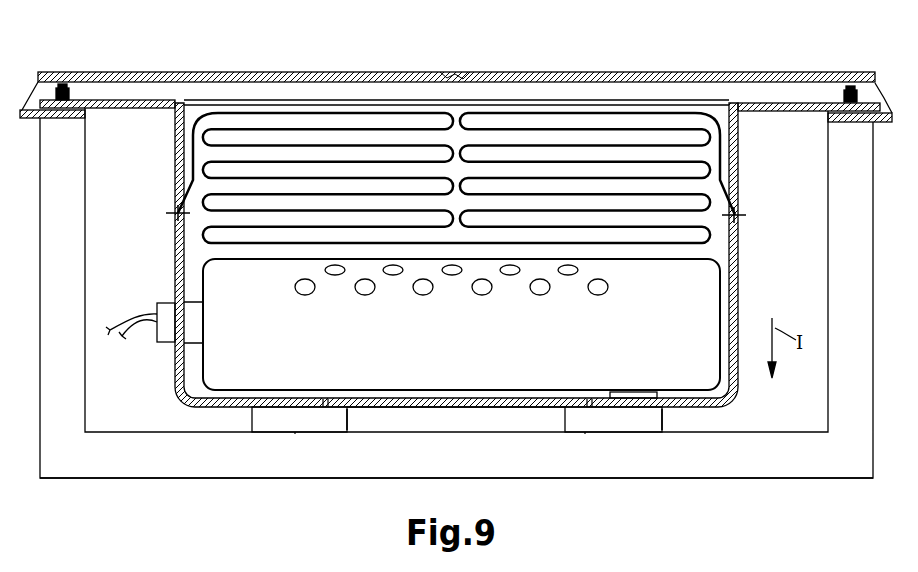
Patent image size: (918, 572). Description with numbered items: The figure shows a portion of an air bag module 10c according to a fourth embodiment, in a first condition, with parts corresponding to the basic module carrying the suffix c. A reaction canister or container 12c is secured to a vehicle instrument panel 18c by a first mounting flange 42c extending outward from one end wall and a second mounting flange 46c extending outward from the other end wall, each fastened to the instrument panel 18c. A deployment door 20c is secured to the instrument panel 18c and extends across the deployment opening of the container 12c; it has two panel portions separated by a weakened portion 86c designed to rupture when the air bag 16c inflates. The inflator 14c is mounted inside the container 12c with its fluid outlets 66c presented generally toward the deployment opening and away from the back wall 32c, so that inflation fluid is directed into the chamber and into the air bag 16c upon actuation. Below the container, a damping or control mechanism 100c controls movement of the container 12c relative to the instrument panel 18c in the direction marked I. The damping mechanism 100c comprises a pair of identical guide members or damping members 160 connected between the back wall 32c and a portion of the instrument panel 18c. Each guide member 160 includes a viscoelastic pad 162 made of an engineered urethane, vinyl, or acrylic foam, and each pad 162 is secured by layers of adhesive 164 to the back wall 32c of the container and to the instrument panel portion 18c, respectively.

The air bag module 10c is at (457, 206).
The container 12c is at (170, 246).
The inflator 14c is at (692, 316).
The air bag 16c is at (463, 108).
The instrument panel 18c is at (62, 118).
The deployment door 20c is at (292, 70).
The back wall 32c is at (463, 410).
The first mounting flange 42c is at (137, 108).
The second mounting flange 46c is at (773, 113).
The fluid outlets 66c is at (336, 276).
The weakened portion 86c is at (456, 74).
The damping mechanism 100c is at (292, 487).
The guide members 160 is at (240, 440).
The viscoelastic pad 162 is at (347, 420).
The layers of adhesive 164 is at (326, 404).